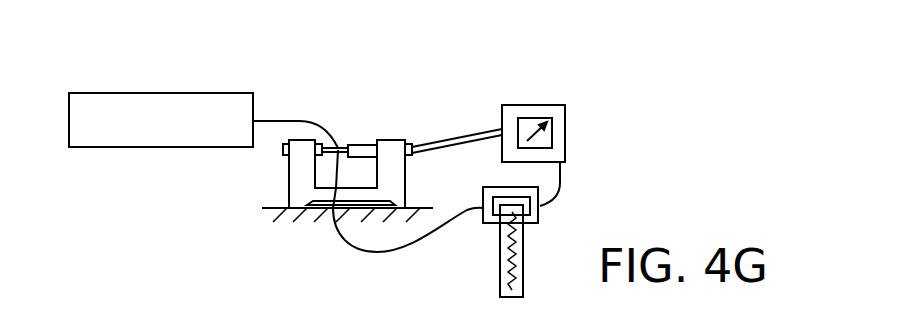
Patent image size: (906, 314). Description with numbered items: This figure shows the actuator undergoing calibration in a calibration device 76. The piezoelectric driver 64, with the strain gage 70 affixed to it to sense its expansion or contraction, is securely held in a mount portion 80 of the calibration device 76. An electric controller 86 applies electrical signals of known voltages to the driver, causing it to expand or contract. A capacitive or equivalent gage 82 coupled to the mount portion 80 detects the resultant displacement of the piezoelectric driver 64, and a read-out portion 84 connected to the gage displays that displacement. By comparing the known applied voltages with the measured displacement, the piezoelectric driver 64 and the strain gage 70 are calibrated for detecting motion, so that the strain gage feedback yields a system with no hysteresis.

The piezoelectric driver 64 is at (342, 148).
The strain gage 70 is at (338, 150).
The calibration device 76 is at (403, 100).
The mount portion 80 is at (400, 140).
The capacitive gage 82 is at (565, 128).
The read-out portion 84 is at (540, 208).
The electric controller 86 is at (247, 93).